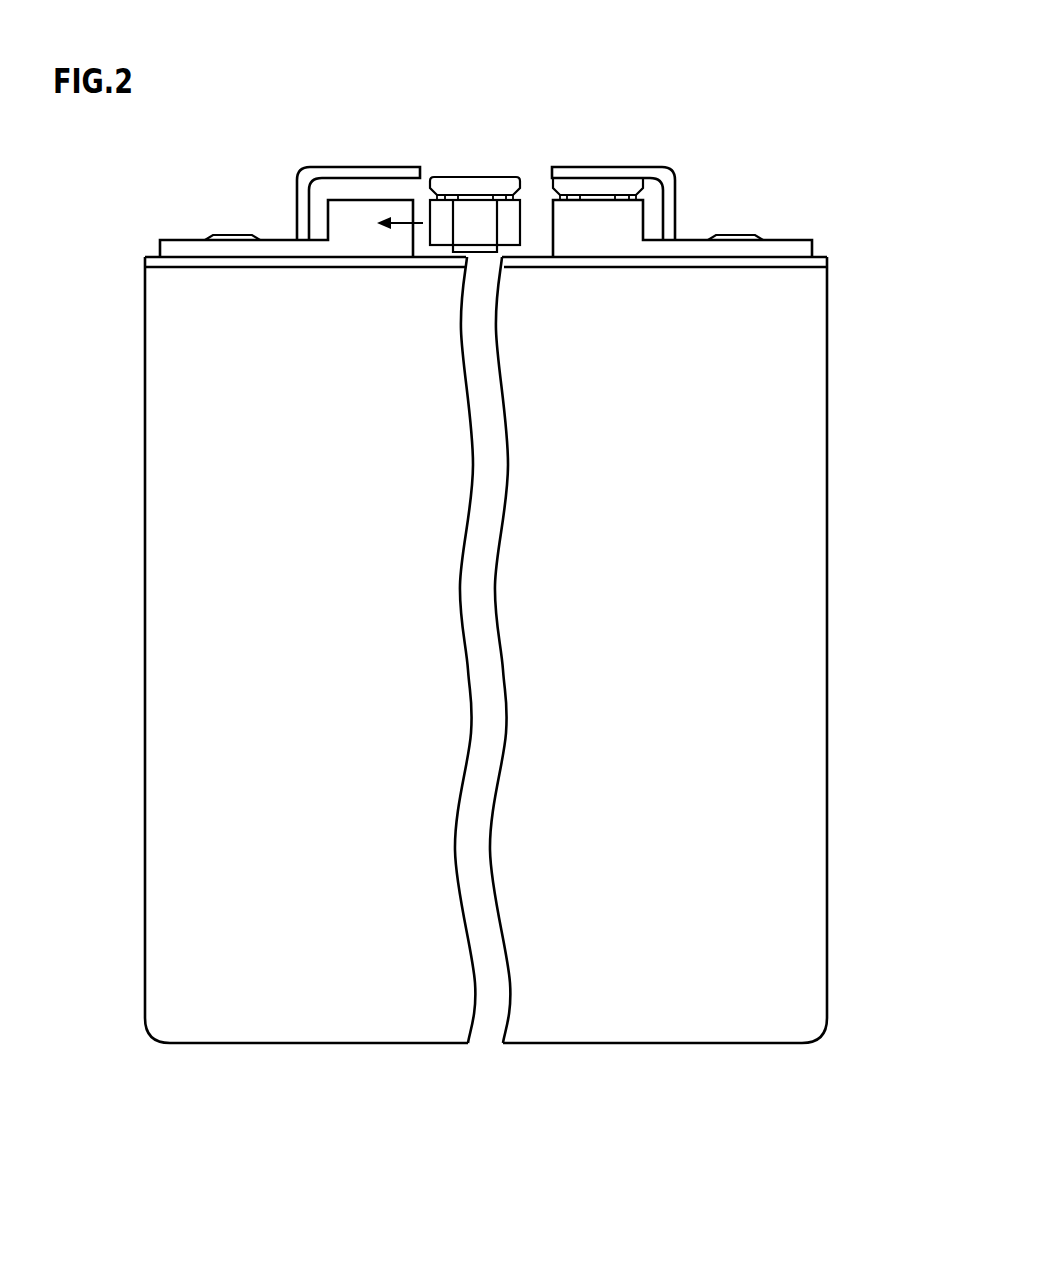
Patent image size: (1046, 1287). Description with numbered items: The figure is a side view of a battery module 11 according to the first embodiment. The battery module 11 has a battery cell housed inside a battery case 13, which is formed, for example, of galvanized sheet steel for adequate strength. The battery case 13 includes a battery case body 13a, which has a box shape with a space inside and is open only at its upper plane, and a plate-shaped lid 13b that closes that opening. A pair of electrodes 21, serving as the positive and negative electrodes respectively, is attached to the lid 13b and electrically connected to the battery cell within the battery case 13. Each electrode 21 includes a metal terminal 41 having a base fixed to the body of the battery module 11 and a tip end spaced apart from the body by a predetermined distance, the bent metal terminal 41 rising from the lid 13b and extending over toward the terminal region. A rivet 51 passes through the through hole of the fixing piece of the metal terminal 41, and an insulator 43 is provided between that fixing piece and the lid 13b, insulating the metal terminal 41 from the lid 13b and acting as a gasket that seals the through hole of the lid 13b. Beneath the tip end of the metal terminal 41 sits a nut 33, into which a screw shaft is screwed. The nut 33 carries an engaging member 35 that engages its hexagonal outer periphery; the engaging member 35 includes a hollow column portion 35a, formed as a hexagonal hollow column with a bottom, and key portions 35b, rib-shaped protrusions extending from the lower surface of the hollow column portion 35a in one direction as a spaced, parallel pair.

The battery module 11 is at (431, 689).
The battery case 13 is at (431, 646).
The battery case body 13a is at (167, 313).
The lid 13b is at (453, 265).
The electrode 21 is at (486, 189).
The nut 33 is at (452, 186).
The engaging member 35 is at (501, 167).
The hollow column portion 35a is at (515, 217).
The key portion 35b is at (517, 250).
The metal terminal 41 is at (308, 177).
The insulator 43 is at (180, 248).
The rivet 51 is at (233, 232).